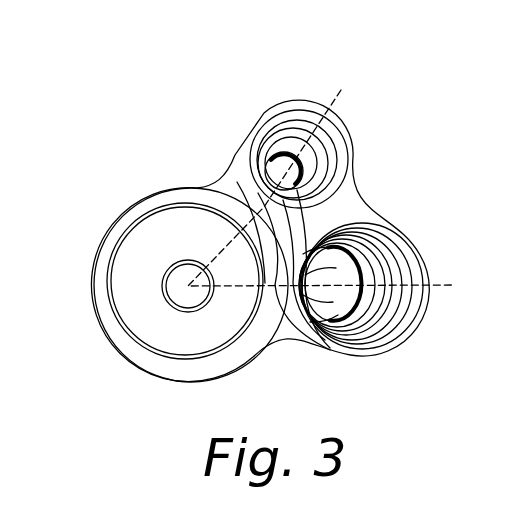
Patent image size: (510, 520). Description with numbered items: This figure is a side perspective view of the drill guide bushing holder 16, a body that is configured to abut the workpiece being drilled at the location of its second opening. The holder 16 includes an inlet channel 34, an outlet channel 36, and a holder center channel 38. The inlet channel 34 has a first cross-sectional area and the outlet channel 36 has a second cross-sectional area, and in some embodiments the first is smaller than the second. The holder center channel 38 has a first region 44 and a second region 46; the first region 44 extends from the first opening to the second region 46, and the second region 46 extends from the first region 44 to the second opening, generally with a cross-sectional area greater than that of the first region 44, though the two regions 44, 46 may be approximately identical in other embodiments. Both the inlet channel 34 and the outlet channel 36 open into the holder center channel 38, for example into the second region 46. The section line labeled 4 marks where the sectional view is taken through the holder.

The drill guide bushing holder 16 is at (150, 97).
The inlet channel 34 is at (287, 155).
The outlet channel 36 is at (343, 300).
The holder center channel 38 is at (172, 307).
The first region 44 is at (190, 312).
The second region 46 is at (135, 262).
The section line 4- 4 is at (341, 90).